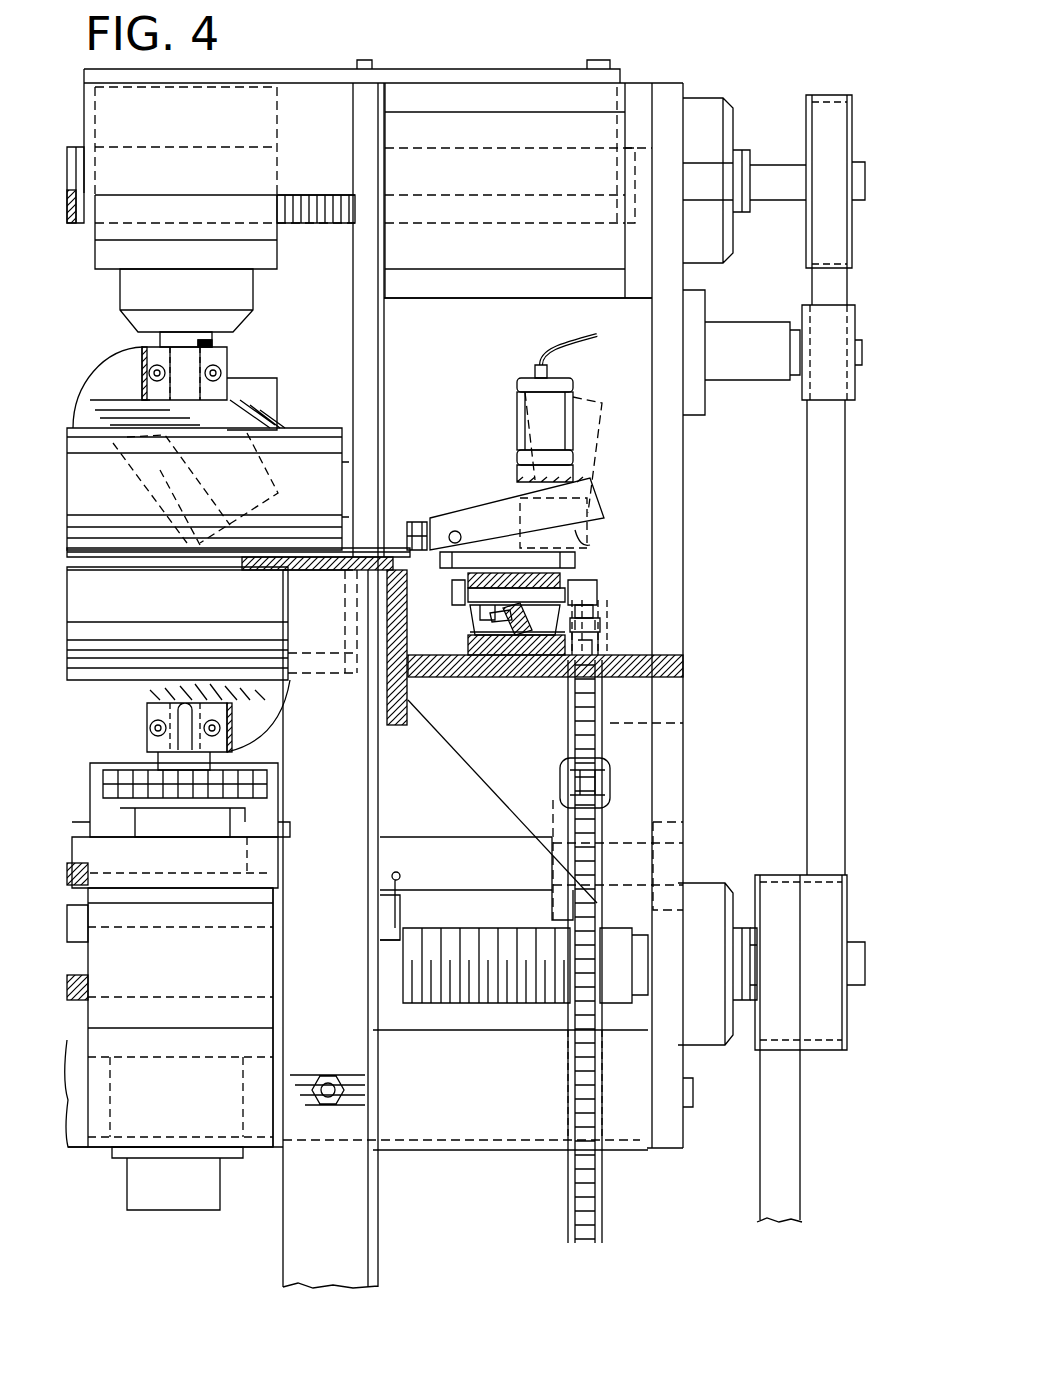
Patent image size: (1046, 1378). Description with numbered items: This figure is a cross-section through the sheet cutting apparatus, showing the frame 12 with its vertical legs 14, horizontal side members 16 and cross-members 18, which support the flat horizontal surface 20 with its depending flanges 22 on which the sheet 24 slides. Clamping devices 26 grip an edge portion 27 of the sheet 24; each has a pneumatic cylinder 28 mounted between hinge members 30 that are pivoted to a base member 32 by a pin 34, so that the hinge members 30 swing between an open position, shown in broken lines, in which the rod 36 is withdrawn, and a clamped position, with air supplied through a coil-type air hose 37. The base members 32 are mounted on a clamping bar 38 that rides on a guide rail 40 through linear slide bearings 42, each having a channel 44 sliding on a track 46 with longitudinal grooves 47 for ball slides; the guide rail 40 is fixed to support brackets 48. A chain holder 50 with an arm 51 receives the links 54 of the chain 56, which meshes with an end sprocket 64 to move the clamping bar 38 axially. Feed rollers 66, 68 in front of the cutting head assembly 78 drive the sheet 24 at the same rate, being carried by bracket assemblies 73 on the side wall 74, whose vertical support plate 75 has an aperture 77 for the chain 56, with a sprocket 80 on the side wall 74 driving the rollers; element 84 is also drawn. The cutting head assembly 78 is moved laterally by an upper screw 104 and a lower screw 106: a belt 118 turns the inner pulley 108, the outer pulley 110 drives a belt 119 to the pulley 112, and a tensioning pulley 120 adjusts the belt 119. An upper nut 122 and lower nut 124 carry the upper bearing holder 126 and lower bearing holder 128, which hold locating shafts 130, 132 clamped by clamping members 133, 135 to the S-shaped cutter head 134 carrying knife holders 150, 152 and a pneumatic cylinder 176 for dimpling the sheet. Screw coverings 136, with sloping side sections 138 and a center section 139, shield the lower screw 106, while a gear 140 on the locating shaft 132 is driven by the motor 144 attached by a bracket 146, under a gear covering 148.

The frame 12 is at (380, 1215).
The vertical legs 14 is at (378, 1182).
The horizontal side members 16 is at (388, 692).
The cross-members 18 is at (254, 612).
The flat horizontal surface 20 is at (150, 562).
The flanges 22 is at (452, 590).
The sheet 24 is at (78, 565).
The clamping devices 26 is at (522, 439).
The edge portion 27 is at (408, 522).
The pneumatic cylinder 28 is at (517, 432).
The hinge members 30 is at (500, 500).
The base member 32 is at (592, 556).
The pin 34 is at (455, 530).
The rod 36 is at (586, 530).
The coil-type air hose 37 is at (572, 345).
The clamping bar 38 is at (585, 578).
The guide rail 40 is at (462, 640).
The linear slide bearings 42 is at (476, 615).
The channel 44 is at (600, 596).
The track 46 is at (515, 632).
The longitudinal grooves 47 is at (500, 622).
The support brackets 48 is at (520, 655).
The chain holder 50 is at (600, 590).
The arm 51 is at (602, 626).
The links 54 is at (600, 640).
The chain 56 is at (605, 1210).
The end sprocket 64 is at (612, 723).
The feed roller 66 is at (320, 428).
The feed roller 68 is at (92, 670).
The bracket assemblies 73 is at (470, 302).
The side wall 74 is at (683, 470).
The vertical support plate 75 is at (505, 800).
The aperture 77 is at (565, 770).
The cutting head assembly 78 is at (85, 392).
The sprocket 80 is at (600, 905).
The drive roller 84 is at (537, 893).
The upper screw 104 is at (300, 225).
The lower screw 106 is at (88, 950).
The inner pulley 108 is at (752, 1040).
The outer pulley 110 is at (847, 1048).
The pulley 112 is at (852, 110).
The belt 118 is at (800, 1152).
The belt 119 is at (847, 600).
The tensioning pulley 120 is at (855, 322).
The upper nut 122 is at (88, 232).
The lower nut 124 is at (80, 1012).
The upper bearing holder 126 is at (118, 292).
The lower bearing holder 128 is at (135, 830).
The locating shaft 130 is at (205, 340).
The locating shaft 132 is at (148, 752).
The clamping member 133 is at (227, 358).
The cutter head 134 is at (125, 352).
The clamping member 135 is at (150, 726).
The screw coverings 136 is at (408, 900).
The side sections 138 is at (408, 922).
The center section 139 is at (385, 882).
The gear 140 is at (150, 780).
The motor 144 is at (125, 1178).
The bracket 146 is at (100, 828).
The gear covering 148 is at (88, 770).
The knife holder 150 is at (240, 400).
The knife holder 152 is at (203, 694).
The pneumatic cylinder 176 is at (277, 400).